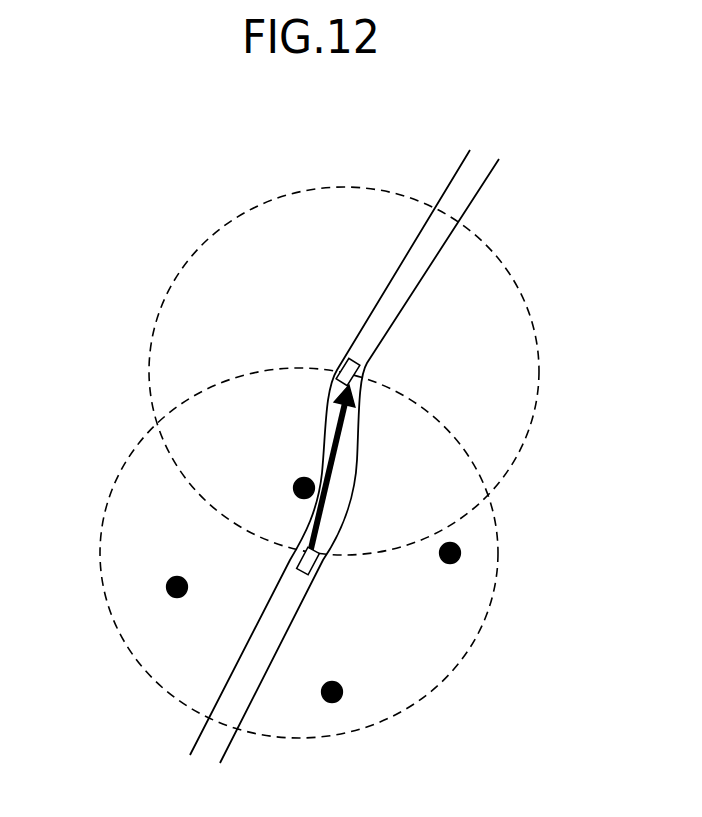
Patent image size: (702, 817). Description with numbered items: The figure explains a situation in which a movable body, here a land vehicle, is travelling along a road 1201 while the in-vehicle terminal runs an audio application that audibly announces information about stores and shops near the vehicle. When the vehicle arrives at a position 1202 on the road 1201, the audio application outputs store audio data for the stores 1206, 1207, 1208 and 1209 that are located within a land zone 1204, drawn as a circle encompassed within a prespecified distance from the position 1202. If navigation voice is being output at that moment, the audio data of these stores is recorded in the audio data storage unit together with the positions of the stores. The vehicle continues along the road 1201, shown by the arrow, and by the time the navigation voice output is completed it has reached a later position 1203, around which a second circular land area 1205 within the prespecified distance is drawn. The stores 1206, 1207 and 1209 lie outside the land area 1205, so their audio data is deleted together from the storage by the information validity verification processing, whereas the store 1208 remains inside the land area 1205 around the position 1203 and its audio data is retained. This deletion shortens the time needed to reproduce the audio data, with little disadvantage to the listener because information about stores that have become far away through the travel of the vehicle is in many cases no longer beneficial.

The road 1201 is at (520, 133).
The position 1202 is at (303, 568).
The end point 1203 is at (362, 366).
The land zone 1204 is at (118, 478).
The land area 1205 is at (247, 211).
The store 1206 is at (170, 578).
The store 1207 is at (365, 658).
The store 1208 is at (300, 478).
The store 1209 is at (455, 540).